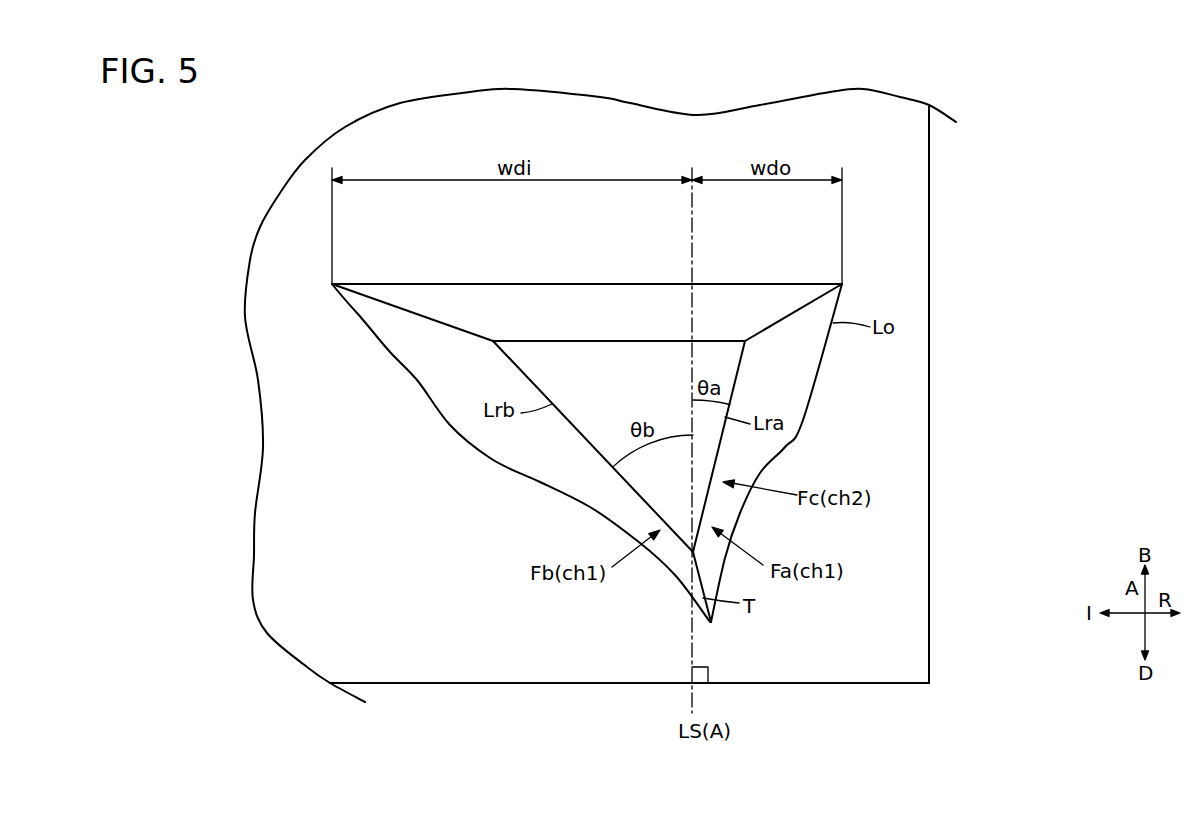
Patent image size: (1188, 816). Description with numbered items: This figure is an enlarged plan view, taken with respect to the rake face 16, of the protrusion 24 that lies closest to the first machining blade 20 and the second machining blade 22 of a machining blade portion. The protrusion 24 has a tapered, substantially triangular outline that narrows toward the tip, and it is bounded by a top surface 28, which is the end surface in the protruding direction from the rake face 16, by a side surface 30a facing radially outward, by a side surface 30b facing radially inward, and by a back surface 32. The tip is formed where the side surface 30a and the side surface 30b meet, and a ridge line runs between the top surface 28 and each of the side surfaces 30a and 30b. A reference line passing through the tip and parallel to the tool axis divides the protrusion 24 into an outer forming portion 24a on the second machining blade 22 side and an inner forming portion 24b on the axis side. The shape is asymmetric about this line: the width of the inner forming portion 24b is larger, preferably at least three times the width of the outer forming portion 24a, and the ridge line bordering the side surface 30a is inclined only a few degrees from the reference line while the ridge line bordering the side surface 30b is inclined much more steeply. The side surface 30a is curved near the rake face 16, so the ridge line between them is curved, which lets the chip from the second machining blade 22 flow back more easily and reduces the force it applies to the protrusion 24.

The rake face 16 is at (300, 230).
The first machining blade 20 is at (527, 686).
The second machining blade 22 is at (930, 503).
The protrusion 24 is at (552, 506).
The outer forming portion 24a is at (730, 271).
The inner forming portion 24b is at (494, 271).
The top surface 28 is at (567, 358).
The side surface (radially outward) 30a is at (795, 375).
The side surface (radially inward) 30b is at (447, 367).
The back surface 32 is at (587, 303).